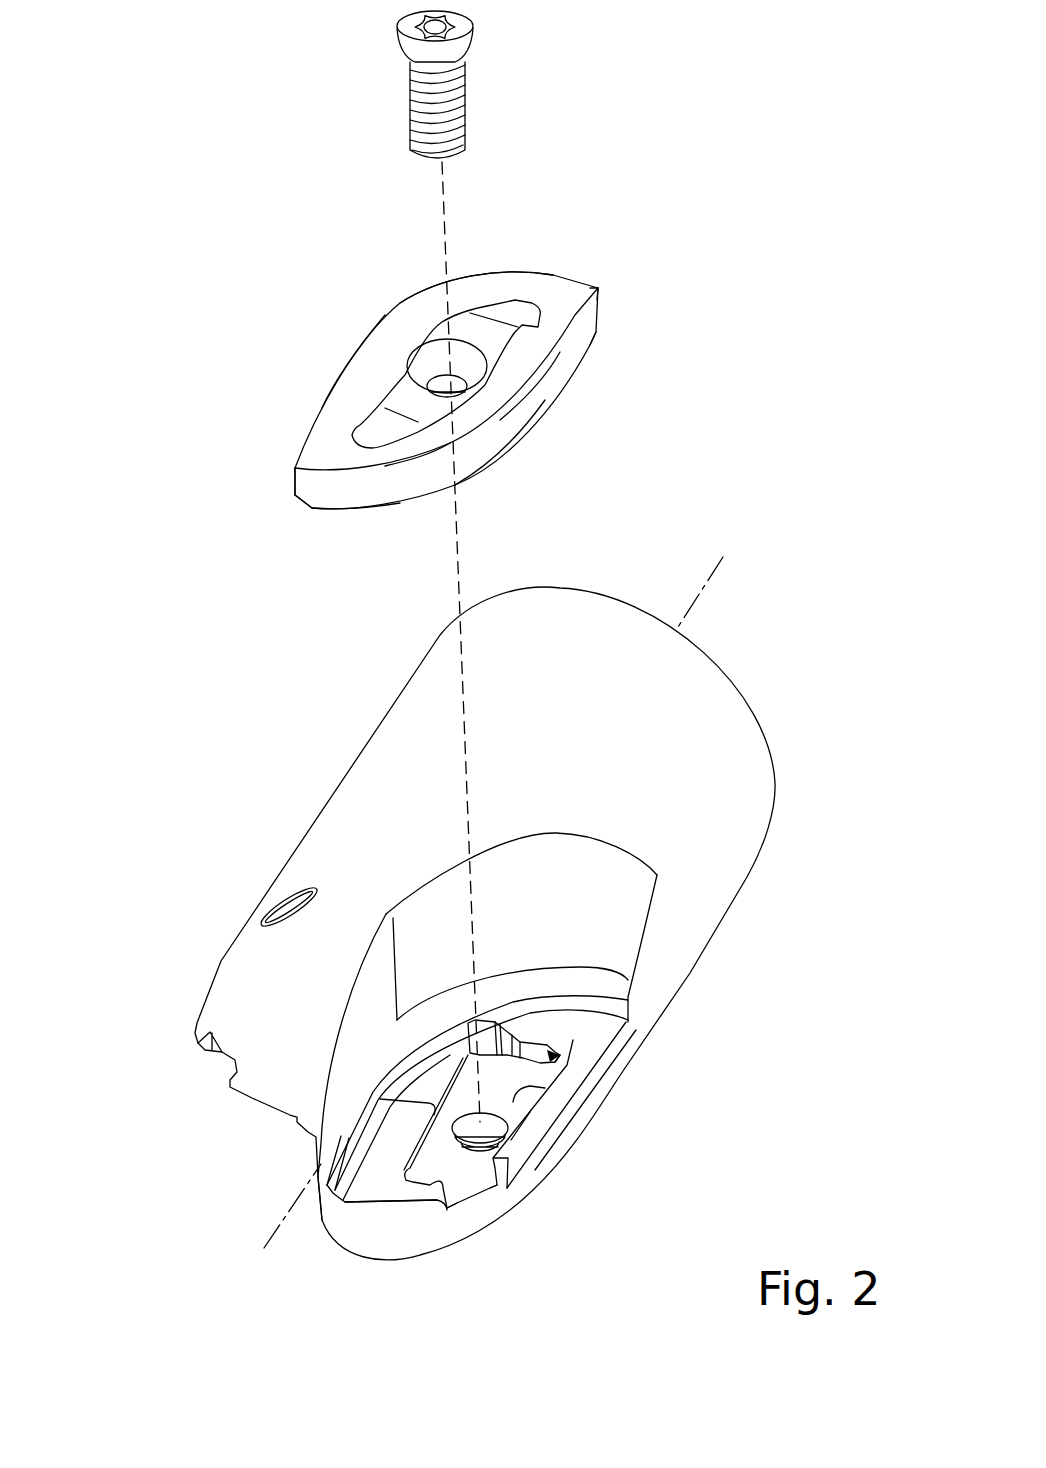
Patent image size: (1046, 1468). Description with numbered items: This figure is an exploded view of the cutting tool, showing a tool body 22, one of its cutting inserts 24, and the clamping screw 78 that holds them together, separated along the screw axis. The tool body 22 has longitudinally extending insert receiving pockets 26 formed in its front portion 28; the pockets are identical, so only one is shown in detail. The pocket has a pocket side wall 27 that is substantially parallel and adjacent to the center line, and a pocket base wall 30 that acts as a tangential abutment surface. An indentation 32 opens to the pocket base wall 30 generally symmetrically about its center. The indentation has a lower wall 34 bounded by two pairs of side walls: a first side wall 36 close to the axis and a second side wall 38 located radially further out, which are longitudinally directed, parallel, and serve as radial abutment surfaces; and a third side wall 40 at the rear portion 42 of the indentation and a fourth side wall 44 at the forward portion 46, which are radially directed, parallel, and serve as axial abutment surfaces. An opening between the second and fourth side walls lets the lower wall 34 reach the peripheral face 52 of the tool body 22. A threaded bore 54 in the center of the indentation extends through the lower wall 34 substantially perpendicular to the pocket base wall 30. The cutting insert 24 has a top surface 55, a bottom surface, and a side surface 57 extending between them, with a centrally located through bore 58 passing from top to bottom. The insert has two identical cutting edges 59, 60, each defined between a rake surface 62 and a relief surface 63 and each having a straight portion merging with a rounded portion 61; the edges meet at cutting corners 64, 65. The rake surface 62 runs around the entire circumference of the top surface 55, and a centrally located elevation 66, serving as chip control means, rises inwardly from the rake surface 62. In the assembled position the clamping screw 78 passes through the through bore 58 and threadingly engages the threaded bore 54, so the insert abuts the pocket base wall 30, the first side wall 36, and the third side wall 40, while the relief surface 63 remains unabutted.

The tool body 22 is at (461, 948).
The cutting insert 24 is at (395, 392).
The insert receiving pocket 26 is at (377, 1018).
The pocket side wall 27 is at (341, 1136).
The front portion 28 is at (227, 1207).
The pocket base wall 30 is at (541, 1125).
The indentation 32 is at (457, 1170).
The lower wall 34 is at (498, 1084).
The first side wall 36 is at (360, 1100).
The second side wall 38 is at (514, 1093).
The third side wall 40 is at (518, 1046).
The rear portion 42 is at (560, 1055).
The fourth side wall 44 is at (380, 1175).
The forward portion 46 is at (460, 1218).
The peripheral face 52 is at (504, 1204).
The threaded bore 54 is at (521, 1136).
The top surface 55 is at (378, 245).
The side surface 57 is at (210, 525).
The through bore 58 is at (430, 365).
The cutting edge 59 is at (490, 424).
The cutting edge 60 is at (328, 392).
The rounded portion 61 is at (400, 462).
The rake surface 62 is at (518, 372).
The relief surface 63 is at (340, 495).
The cutting corner 64 is at (295, 470).
The cutting corner 65 is at (598, 288).
The elevation 66 is at (463, 328).
The clamping screw 78 is at (405, 33).